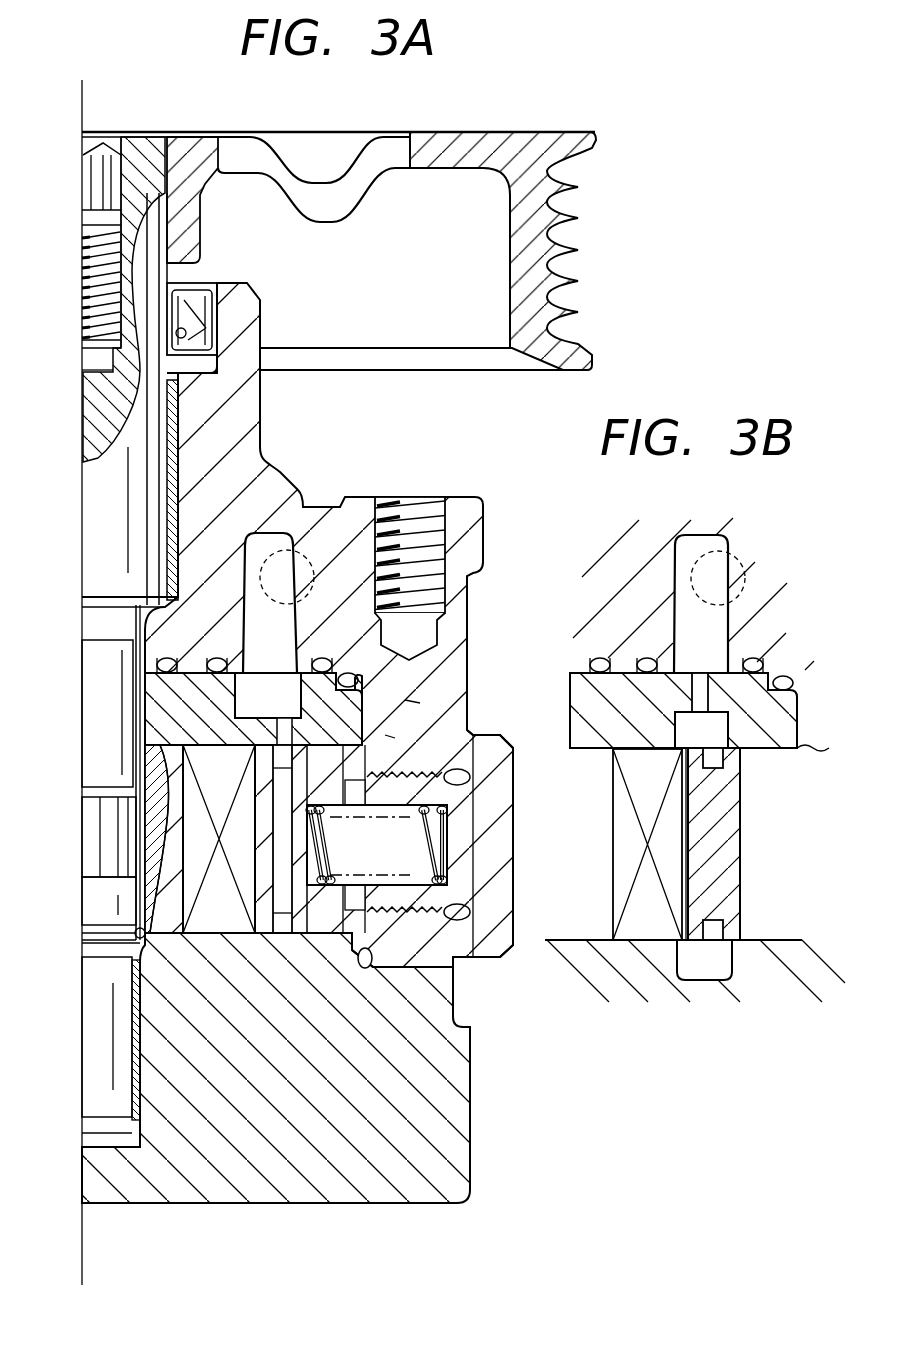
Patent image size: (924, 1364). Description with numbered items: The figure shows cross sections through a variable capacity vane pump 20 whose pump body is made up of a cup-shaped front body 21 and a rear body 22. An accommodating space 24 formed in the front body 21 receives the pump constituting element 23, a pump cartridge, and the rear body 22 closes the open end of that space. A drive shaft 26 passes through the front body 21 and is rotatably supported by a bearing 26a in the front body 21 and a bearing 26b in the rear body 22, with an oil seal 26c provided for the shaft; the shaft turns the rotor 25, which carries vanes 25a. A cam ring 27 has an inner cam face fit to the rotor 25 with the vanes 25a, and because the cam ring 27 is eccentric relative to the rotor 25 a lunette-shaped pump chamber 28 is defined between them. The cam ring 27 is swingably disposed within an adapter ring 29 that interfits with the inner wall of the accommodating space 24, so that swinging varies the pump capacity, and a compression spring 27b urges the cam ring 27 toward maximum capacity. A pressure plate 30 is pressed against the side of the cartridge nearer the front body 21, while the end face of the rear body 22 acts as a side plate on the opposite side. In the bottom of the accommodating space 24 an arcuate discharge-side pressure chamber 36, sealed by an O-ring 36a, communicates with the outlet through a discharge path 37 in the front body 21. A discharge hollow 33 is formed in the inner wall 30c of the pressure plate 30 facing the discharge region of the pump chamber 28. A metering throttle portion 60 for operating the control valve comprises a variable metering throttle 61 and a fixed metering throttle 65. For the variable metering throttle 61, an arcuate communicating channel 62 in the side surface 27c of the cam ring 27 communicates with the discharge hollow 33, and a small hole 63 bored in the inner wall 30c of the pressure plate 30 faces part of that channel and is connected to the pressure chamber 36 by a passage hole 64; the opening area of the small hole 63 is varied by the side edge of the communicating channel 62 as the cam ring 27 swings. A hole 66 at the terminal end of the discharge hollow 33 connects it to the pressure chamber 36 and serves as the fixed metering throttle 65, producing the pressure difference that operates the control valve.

In FIG. 3A, the variable capacity vane pump 20 is at (634, 272).
In FIG. 3A, the front body 21 is at (250, 447).
In FIG. 3B, the front body 21 is at (765, 615).
In FIG. 3A, the rear body 22 is at (470, 1105).
In FIG. 3A, the pump constituting element 23 is at (368, 688).
In FIG. 3A, the accommodating space 24 is at (420, 702).
In FIG. 3A, the rotor 25 is at (157, 782).
In FIG. 3A, the vanes 25a is at (197, 847).
In FIG. 3B, the vanes 25a is at (672, 860).
In FIG. 3A, the drive shaft 26 is at (110, 632).
In FIG. 3A, the bearing 26a is at (172, 495).
In FIG. 3A, the bearing 26b is at (113, 1020).
In FIG. 3A, the oil seal 26c is at (172, 330).
In FIG. 3A, the cam ring 27 is at (320, 948).
In FIG. 3B, the cam ring 27 is at (718, 903).
In FIG. 3A, the compression spring 27b is at (460, 850).
In FIG. 3A, the side surface 27c is at (298, 730).
In FIG. 3A, the pump chamber 28 is at (248, 938).
In FIG. 3A, the adapter ring 29 is at (390, 737).
In FIG. 3A, the pressure plate 30 is at (253, 709).
In FIG. 3B, the pressure plate 30 is at (800, 730).
In FIG. 3A, the inner wall 30c is at (265, 762).
In FIG. 3B, the discharge hollow 33 is at (735, 752).
In FIG. 3A, the discharge-side pressure chamber 36 is at (268, 545).
In FIG. 3B, the discharge-side pressure chamber 36 is at (712, 540).
In FIG. 3B, the O-ring 36a is at (757, 657).
In FIG. 3A, the discharge path 37 is at (310, 556).
In FIG. 3B, the discharge path 37 is at (745, 565).
In FIG. 3B, the metering throttle portion 60 is at (740, 762).
In FIG. 3A, the variable metering throttle 61 is at (376, 845).
In FIG. 3A, the communicating channel 62 is at (283, 790).
In FIG. 3B, the communicating channel 62 is at (687, 775).
In FIG. 3A, the small hole 63 is at (300, 748).
In FIG. 3A, the passage hole 64 is at (298, 695).
In FIG. 3B, the fixed metering throttle 65 is at (690, 690).
In FIG. 3B, the hole 66 is at (690, 762).